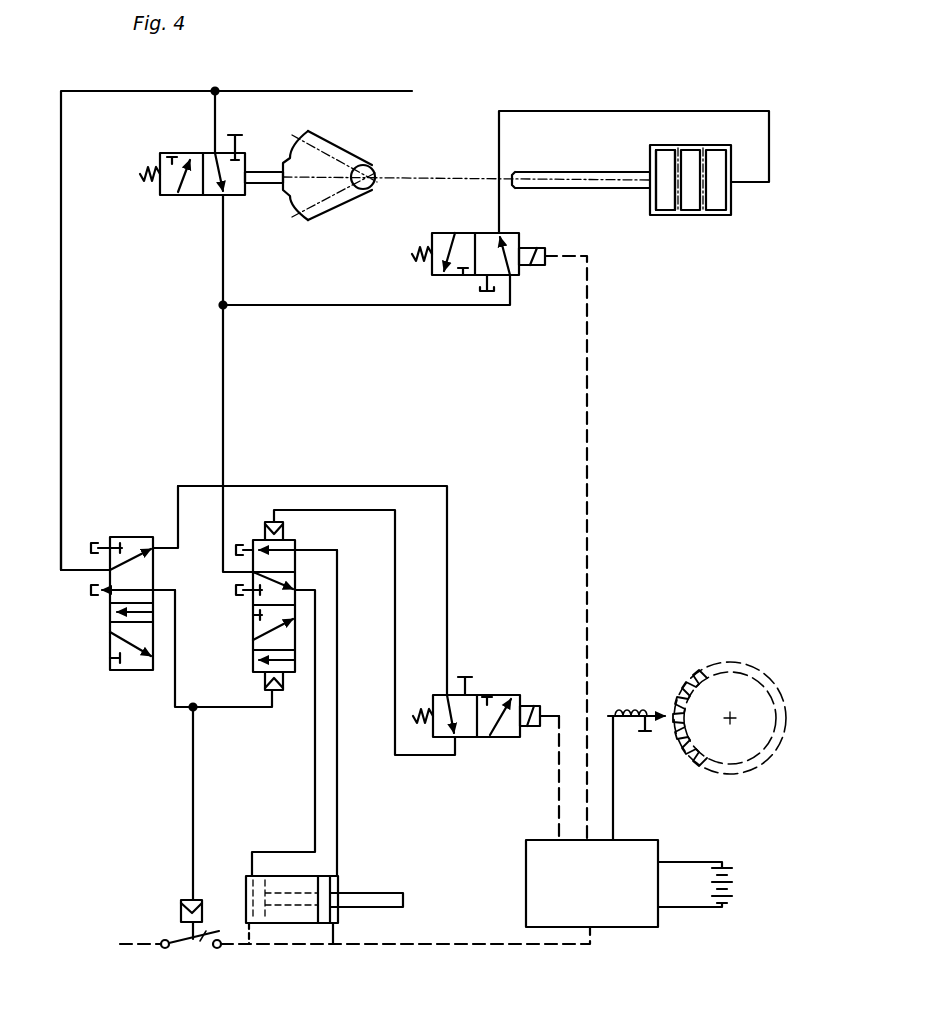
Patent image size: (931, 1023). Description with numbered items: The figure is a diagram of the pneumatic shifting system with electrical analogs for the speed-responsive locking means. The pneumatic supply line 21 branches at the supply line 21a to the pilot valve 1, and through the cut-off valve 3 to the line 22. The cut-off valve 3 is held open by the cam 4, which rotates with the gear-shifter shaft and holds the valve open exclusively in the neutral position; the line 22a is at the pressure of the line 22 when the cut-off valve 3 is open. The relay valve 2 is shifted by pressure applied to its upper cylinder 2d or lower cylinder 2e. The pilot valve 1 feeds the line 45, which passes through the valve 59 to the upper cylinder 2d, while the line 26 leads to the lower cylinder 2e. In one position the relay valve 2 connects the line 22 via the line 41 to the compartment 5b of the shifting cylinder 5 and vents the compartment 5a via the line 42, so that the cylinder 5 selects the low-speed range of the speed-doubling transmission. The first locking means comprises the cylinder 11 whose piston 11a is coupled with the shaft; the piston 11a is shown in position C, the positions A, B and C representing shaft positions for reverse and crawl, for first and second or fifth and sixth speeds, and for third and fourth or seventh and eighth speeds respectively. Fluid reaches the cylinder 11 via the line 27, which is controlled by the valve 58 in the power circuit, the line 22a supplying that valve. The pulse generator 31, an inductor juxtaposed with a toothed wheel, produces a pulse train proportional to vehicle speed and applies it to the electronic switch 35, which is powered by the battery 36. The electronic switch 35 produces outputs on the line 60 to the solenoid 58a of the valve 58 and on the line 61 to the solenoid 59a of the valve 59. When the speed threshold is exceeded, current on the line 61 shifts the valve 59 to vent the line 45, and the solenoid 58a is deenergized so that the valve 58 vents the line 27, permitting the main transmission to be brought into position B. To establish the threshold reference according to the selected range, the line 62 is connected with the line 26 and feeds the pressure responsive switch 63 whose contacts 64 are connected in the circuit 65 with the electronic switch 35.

The pilot valve 1 is at (118, 632).
The relay valve 2 is at (274, 626).
The upper cylinder of relay valve 2d is at (285, 531).
The lower cylinder of relay valve 2e is at (281, 691).
The cut-off valve 3 is at (165, 196).
The cam 4 is at (340, 160).
The shifting cylinder 5 is at (321, 934).
The compartment 5a is at (333, 926).
The compartment 5b is at (252, 958).
The cylinder 11 is at (631, 165).
The piston 11a is at (663, 203).
The position A is at (722, 147).
The position B is at (698, 147).
The position C is at (662, 147).
The pneumatic supply line 21 is at (358, 91).
The supply line branch 21a is at (62, 350).
The line 22 is at (221, 350).
The line 22a is at (303, 306).
The line 26 is at (237, 710).
The line 27 is at (579, 110).
The pulse generator 31 is at (651, 714).
The electronic switch 35 is at (628, 910).
The battery 36 is at (730, 872).
The line 41 is at (312, 775).
The line 42 is at (338, 778).
The line 45 is at (449, 586).
The valve 58 is at (458, 276).
The solenoid 58a is at (537, 266).
The valve 59 is at (492, 724).
The solenoid 59a is at (534, 719).
The electrical line 60 is at (590, 587).
The line 61 is at (553, 711).
The line 62 is at (190, 772).
The pressure responsive switch 63 is at (185, 910).
The switch contacts 64 is at (205, 942).
The circuit 65 is at (437, 947).